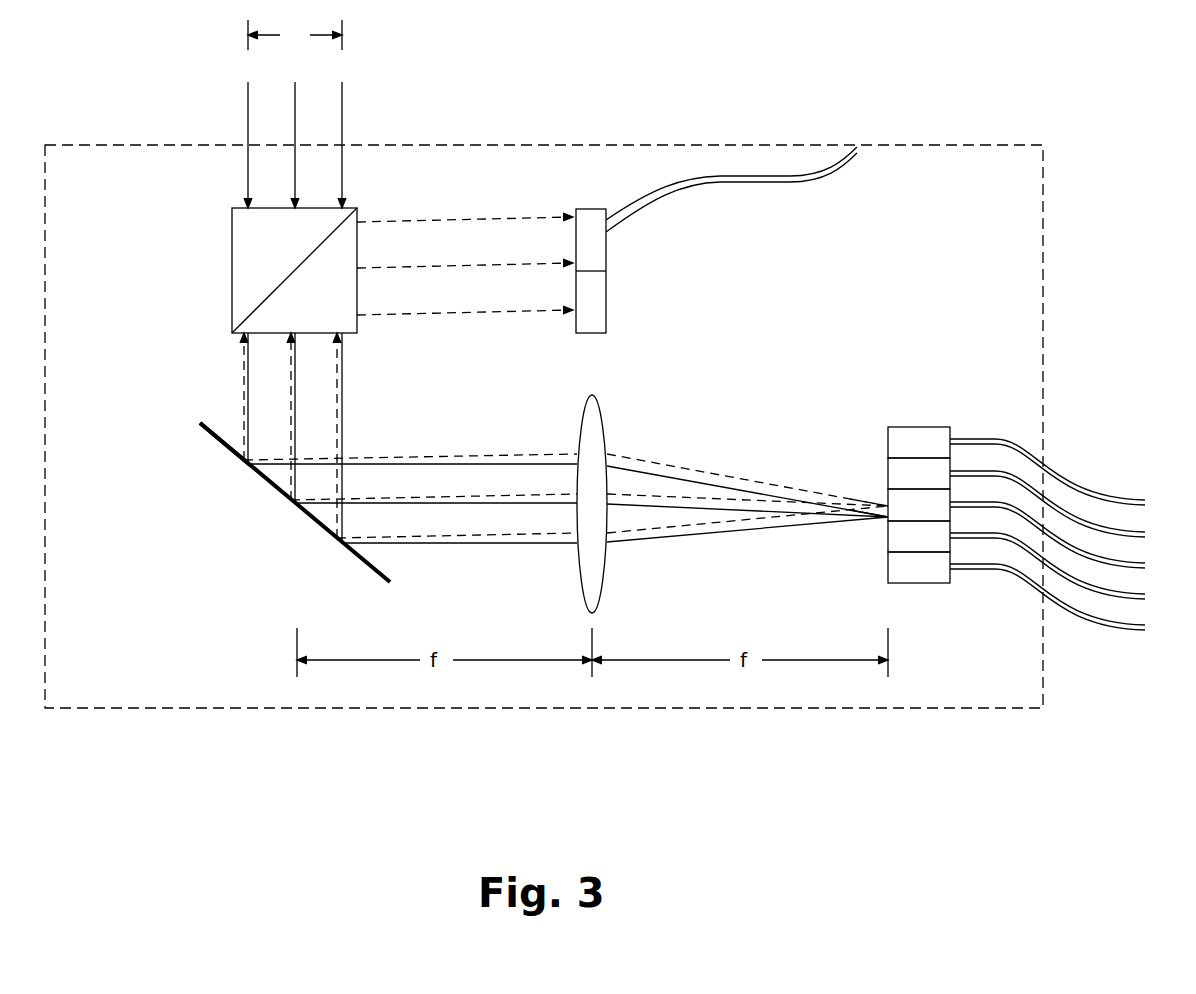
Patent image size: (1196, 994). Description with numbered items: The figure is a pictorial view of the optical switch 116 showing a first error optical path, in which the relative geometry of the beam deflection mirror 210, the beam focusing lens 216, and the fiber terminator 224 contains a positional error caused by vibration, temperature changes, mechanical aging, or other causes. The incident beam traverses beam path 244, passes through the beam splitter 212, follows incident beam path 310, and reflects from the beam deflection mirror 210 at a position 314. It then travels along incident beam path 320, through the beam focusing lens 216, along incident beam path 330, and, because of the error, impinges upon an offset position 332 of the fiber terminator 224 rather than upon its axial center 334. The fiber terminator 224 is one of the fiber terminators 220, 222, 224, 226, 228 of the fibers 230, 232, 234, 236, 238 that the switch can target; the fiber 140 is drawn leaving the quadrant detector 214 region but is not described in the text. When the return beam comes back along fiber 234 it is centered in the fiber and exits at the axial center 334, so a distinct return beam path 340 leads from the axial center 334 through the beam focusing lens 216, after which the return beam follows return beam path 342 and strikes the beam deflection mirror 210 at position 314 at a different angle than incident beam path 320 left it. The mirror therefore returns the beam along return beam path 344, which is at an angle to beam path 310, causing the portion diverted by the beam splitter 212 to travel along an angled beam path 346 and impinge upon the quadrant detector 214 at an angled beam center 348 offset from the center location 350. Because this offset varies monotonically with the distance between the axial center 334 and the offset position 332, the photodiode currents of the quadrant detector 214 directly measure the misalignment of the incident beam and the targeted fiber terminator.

The optical switch 116 is at (949, 146).
The optical fiber 140 is at (762, 178).
The beam deflection mirror 210 is at (296, 505).
The beam splitter 212 is at (232, 262).
The quadrant detector 214 is at (607, 305).
The beam focusing lens 216 is at (597, 420).
The fiber terminator 220 is at (919, 442).
The fiber terminator 222 is at (919, 473).
The fiber terminator 224 is at (919, 505).
The fiber terminator 226 is at (919, 536).
The fiber terminator 228 is at (919, 567).
The fiber 230 is at (1082, 472).
The fiber 232 is at (1085, 518).
The fiber 234 is at (1085, 549).
The fiber 236 is at (1085, 579).
The fiber 238 is at (1085, 610).
The beam path 244 is at (247, 130).
The incident beam path 310 is at (342, 372).
The position 314 is at (224, 440).
The incident beam path 320 is at (440, 545).
The incident beam path 330 is at (760, 536).
The offset position 332 is at (886, 522).
The axial center 334 is at (886, 501).
The return beam path 340 is at (760, 483).
The return beam path 342 is at (440, 459).
The return beam path 344 is at (244, 372).
The angled beam path 346 is at (406, 222).
The angled beam center 348 is at (574, 263).
The center location 350 is at (576, 272).